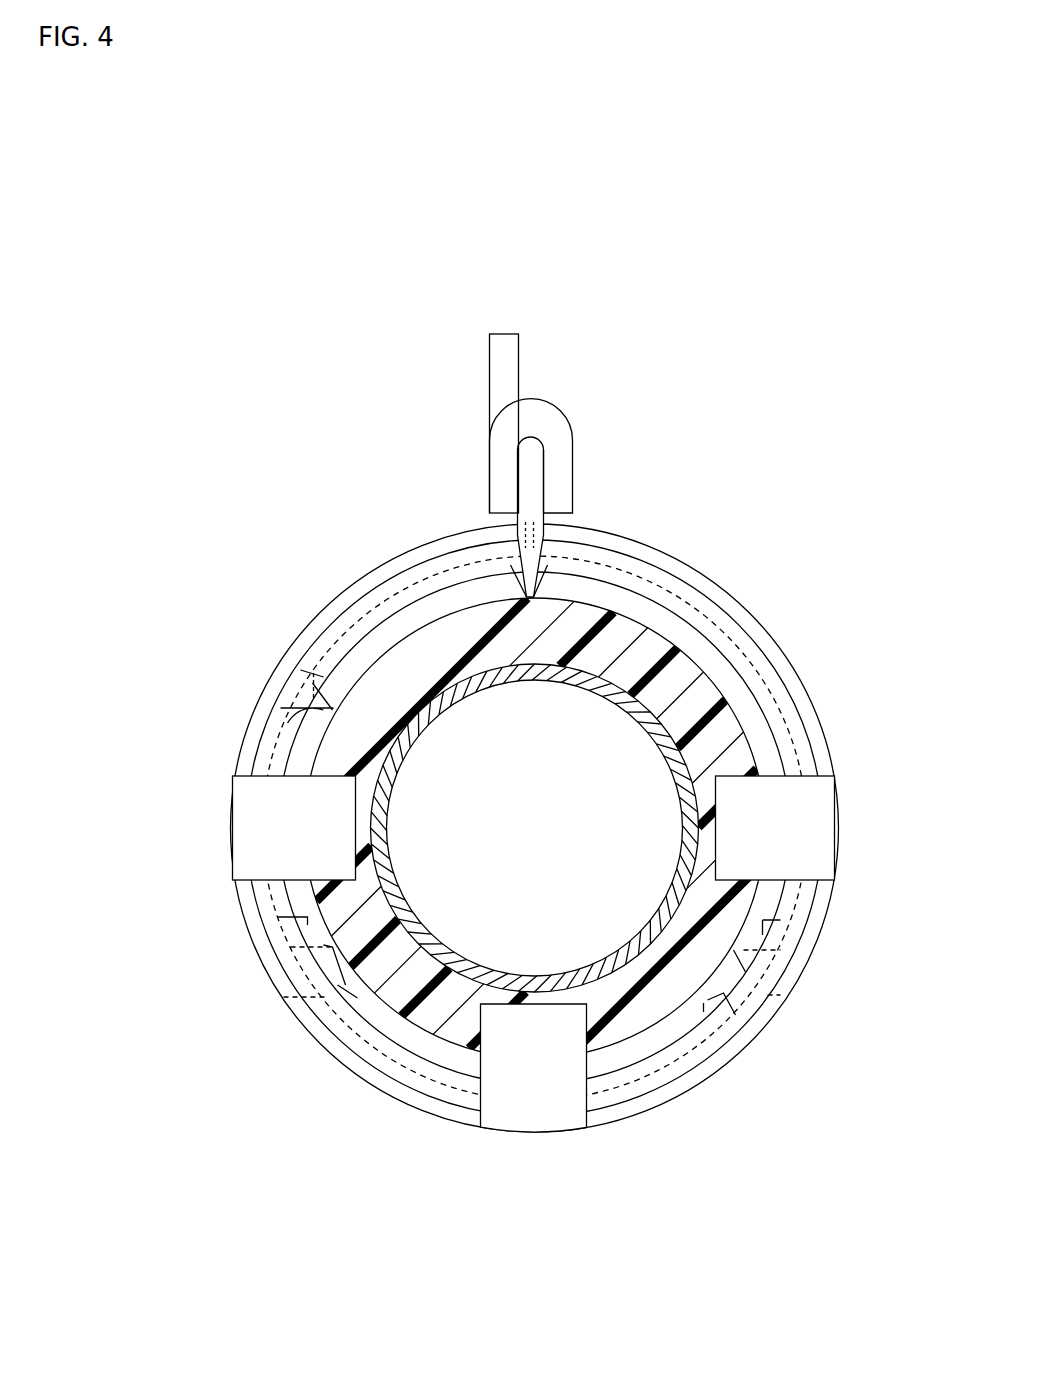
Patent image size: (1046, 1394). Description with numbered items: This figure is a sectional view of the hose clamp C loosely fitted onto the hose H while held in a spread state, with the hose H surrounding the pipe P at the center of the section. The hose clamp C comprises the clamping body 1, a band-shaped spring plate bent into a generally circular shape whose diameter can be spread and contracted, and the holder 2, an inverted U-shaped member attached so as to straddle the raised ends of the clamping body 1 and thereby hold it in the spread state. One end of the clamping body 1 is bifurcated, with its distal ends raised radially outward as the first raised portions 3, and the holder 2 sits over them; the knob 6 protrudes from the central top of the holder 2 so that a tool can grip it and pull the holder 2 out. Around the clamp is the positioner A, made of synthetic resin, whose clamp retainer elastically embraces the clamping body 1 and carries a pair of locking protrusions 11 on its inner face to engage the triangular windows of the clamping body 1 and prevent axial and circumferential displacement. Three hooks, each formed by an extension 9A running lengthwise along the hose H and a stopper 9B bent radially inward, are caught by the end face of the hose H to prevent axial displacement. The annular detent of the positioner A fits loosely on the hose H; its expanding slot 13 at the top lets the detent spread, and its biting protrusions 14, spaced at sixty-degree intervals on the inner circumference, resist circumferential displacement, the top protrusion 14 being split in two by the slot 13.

The clamping body 1 is at (395, 1050).
The holder 2 is at (552, 422).
The first raised portions 3 is at (518, 467).
The knob 6 is at (497, 355).
The extension 9A is at (258, 806).
The stopper 9B is at (800, 808).
The locking protrusions 11 is at (315, 1015).
The expanding slot 13 is at (532, 553).
The biting protrusions 14 is at (330, 713).
The positioner A is at (803, 661).
The hose clamp C is at (366, 626).
The hose H is at (647, 638).
The pipe P is at (628, 925).